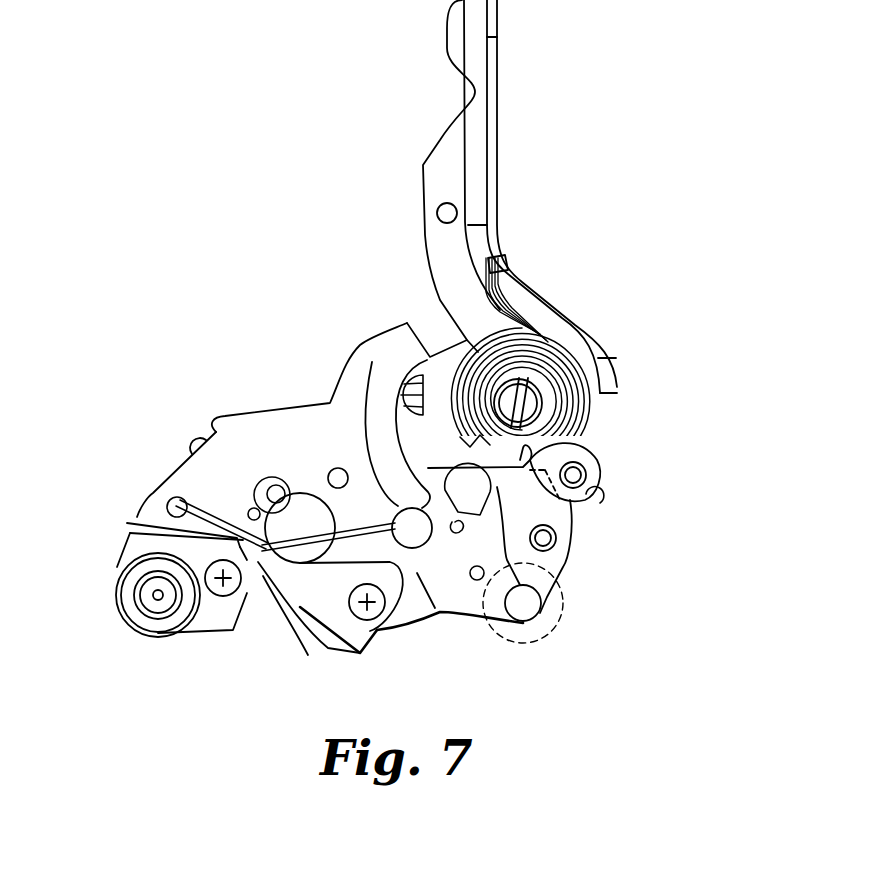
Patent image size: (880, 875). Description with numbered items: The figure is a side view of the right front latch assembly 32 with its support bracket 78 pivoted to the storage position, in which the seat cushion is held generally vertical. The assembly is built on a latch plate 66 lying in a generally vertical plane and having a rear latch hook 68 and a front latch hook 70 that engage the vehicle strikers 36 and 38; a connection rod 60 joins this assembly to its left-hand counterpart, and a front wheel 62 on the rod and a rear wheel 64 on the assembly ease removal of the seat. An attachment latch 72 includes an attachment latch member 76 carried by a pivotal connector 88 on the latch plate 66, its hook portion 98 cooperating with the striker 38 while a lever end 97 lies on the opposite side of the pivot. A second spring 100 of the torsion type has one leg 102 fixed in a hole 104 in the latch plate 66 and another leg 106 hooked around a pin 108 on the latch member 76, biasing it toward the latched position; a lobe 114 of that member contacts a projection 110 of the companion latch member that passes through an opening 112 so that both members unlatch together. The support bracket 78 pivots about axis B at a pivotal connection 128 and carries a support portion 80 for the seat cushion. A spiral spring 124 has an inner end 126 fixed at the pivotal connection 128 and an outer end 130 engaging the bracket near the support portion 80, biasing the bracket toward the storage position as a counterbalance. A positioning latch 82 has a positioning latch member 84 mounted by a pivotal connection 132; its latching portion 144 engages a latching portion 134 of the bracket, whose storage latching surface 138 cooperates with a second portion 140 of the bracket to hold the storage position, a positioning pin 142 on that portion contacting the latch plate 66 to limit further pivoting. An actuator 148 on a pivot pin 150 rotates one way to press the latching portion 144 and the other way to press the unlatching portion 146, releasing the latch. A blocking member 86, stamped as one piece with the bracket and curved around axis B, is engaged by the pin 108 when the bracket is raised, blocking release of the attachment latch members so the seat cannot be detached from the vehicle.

The right front latch assembly 32 is at (190, 365).
The striker 36 is at (240, 630).
The striker 38 is at (360, 617).
The connection rod 60 is at (555, 622).
The front wheel 62 is at (563, 607).
The rear wheel 64 is at (130, 620).
The latch plate 66 is at (274, 412).
The rear latch hook 68 is at (330, 643).
The front latch hook 70 is at (500, 620).
The attachment latch 72 is at (352, 513).
The attachment latch member 76 is at (440, 612).
The support bracket 78 is at (507, 173).
The support portion 80 is at (497, 133).
The positioning latch 82 is at (533, 443).
The positioning latch member 84 is at (577, 510).
The blocking member 86 is at (387, 458).
The pivotal connector 88 is at (297, 527).
The lever end 97 is at (587, 500).
The hook portion 98 is at (410, 630).
The second spring 100 is at (262, 557).
The leg 102 is at (170, 507).
The hole 104 is at (157, 490).
The leg 106 is at (337, 545).
The pin 108 is at (410, 533).
The projection 110 is at (277, 493).
The opening 112 is at (255, 482).
The lobe 114 is at (257, 510).
The spring 124 is at (580, 353).
The inner end 126 is at (510, 380).
The pivotal connection 128 is at (437, 302).
The outer end 130 is at (500, 253).
The pivotal connection 132 is at (470, 558).
The latching portion 134 is at (487, 443).
The storage latching surface 138 is at (580, 467).
The second portion 140 is at (597, 478).
The positioning pin 142 is at (590, 472).
The latching portion 144 is at (467, 470).
The unlatching portion 146 is at (527, 568).
The actuator 148 is at (570, 543).
The pivot pin 150 is at (570, 587).
The axis B is at (520, 400).